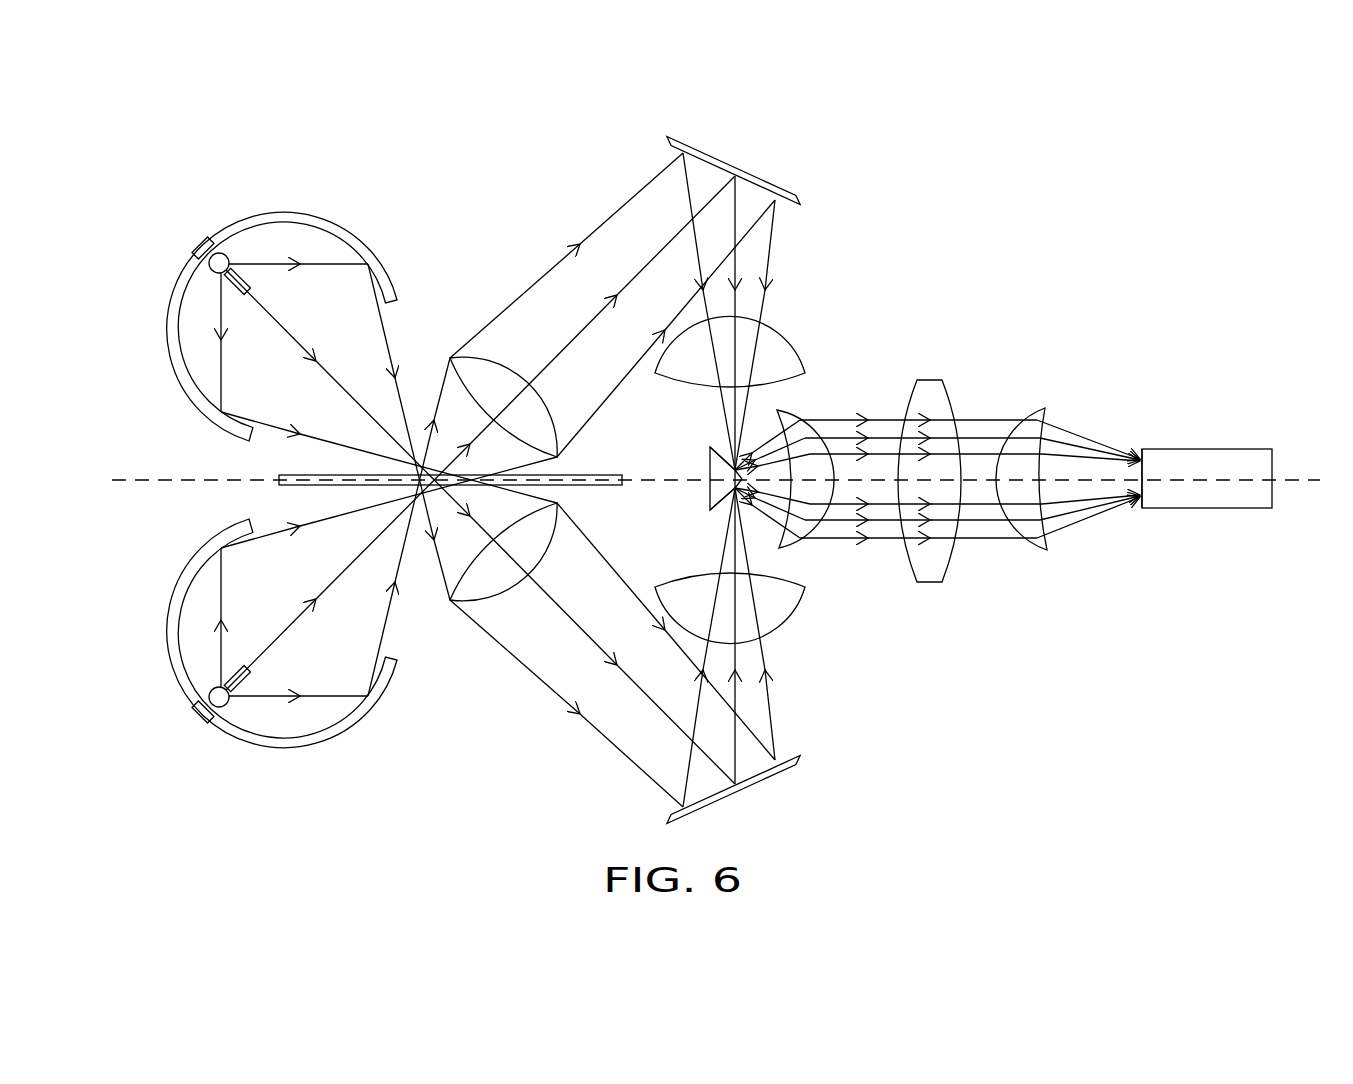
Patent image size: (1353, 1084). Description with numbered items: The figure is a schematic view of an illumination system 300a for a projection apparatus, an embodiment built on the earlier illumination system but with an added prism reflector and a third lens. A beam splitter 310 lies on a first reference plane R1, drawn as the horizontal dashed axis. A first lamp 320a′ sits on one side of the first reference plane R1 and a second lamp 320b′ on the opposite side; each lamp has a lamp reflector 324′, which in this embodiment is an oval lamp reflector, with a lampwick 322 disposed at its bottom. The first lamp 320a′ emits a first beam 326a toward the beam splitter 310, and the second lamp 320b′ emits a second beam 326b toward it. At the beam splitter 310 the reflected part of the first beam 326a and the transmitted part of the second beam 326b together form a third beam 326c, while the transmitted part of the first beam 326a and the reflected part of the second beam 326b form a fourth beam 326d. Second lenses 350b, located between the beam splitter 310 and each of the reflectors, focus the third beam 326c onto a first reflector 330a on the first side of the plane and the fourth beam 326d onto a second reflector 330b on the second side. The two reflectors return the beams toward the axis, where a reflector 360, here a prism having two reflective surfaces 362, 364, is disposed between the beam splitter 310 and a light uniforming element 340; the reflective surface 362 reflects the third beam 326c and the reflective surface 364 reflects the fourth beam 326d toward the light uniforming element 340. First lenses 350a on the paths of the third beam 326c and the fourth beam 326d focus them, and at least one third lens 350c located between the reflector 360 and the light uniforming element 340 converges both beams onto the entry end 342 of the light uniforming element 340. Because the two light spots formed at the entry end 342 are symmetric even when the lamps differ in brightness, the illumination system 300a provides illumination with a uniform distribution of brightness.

The illumination system 300a is at (1178, 811).
The beam splitter 310 is at (282, 485).
The first lamp 320a′ is at (292, 130).
The second lamp 320b′ is at (308, 827).
The lampwick 322 is at (228, 253).
The lamp reflector 324′ is at (276, 213).
The first beam 326a is at (384, 336).
The second beam 326b is at (401, 568).
The third beam 326c is at (596, 229).
The fourth beam 326d is at (611, 738).
The first reflector 330a is at (713, 152).
The second reflector 330b is at (755, 780).
The light uniforming element 340 is at (1197, 458).
The entry end 342 is at (1146, 488).
The first lens 350a is at (785, 358).
The second lens 350b is at (485, 373).
The third lens 350c is at (795, 432).
The reflector 360 is at (745, 514).
The reflective surface 362 is at (721, 453).
The reflective surface 364 is at (721, 505).
The first reference plane R1 is at (175, 477).